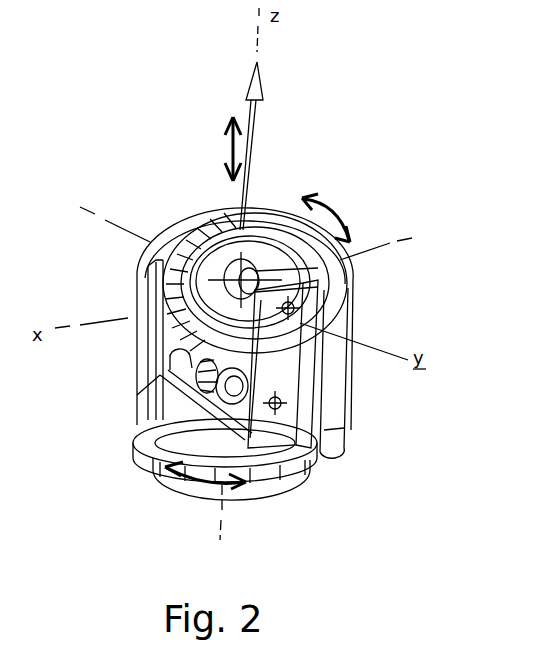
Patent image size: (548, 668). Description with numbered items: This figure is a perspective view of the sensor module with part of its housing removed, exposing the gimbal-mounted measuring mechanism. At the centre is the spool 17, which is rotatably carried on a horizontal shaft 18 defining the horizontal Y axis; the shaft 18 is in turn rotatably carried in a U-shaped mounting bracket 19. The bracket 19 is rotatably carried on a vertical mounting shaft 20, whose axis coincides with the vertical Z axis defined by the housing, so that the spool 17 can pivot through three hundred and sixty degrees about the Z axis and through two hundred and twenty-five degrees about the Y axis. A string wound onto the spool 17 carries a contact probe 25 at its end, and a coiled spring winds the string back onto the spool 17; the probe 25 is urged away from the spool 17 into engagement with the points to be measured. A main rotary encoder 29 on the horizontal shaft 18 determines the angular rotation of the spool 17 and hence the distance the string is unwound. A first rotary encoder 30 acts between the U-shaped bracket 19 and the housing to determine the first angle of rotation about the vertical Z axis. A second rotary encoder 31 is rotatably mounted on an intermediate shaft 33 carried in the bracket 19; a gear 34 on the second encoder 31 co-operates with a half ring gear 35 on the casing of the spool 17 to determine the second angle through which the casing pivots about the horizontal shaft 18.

The spool 17 is at (270, 245).
The horizontal shaft 18 is at (312, 322).
The U-shaped mounting bracket 19 is at (300, 390).
The vertical mounting shaft 20 is at (200, 415).
The contact probe 25 is at (262, 88).
The main rotary encoder 29 is at (320, 279).
The first rotary encoder 30 is at (213, 435).
The second rotary encoder 31 is at (222, 375).
The intermediate shaft 33 is at (177, 367).
The gear 34 is at (197, 383).
The half ring gear 35 is at (225, 243).